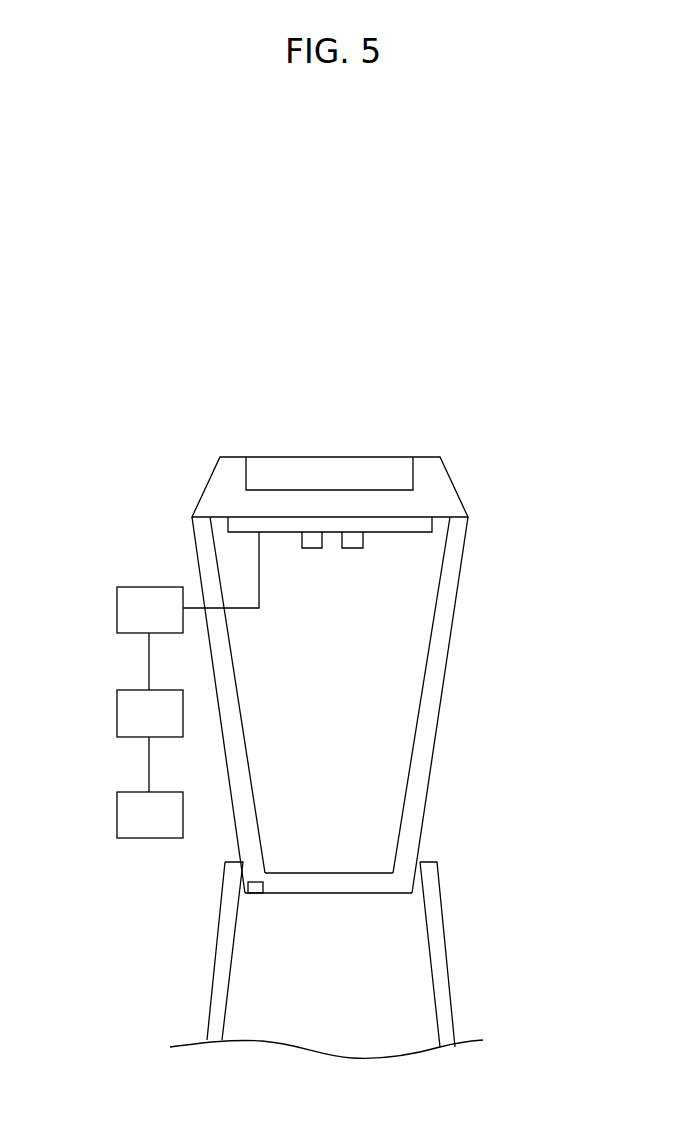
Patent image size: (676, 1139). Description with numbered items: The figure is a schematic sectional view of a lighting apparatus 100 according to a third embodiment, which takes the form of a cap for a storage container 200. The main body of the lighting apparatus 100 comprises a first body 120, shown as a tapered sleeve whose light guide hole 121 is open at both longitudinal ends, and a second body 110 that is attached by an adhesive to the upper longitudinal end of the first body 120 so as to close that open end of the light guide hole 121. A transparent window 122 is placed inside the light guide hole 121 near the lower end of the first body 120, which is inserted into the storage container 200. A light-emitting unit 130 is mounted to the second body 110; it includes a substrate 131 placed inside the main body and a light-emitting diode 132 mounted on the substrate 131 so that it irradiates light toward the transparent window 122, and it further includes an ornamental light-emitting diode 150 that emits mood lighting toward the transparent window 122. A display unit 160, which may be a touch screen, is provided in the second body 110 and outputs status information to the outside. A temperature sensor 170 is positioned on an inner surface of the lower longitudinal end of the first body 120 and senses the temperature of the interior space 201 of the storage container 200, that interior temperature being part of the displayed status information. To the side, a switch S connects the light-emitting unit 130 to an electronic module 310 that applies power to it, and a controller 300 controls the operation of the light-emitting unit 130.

The lighting apparatus 100 is at (488, 513).
The second body 110 is at (453, 482).
The first body 120 is at (435, 678).
The light guide hole 121 is at (395, 785).
The transparent window 122 is at (367, 878).
The light-emitting unit 130 is at (552, 550).
The substrate 131 is at (413, 532).
The light-emitting diode 132 is at (360, 548).
The ornamental light-emitting diode 150 is at (313, 533).
The display unit 160 is at (395, 472).
The temperature sensor 170 is at (248, 886).
The storage container 200 is at (443, 1020).
The interior space 201 is at (398, 973).
The switch S is at (117, 608).
The electronic module 310 is at (117, 712).
The controller 300 is at (117, 815).